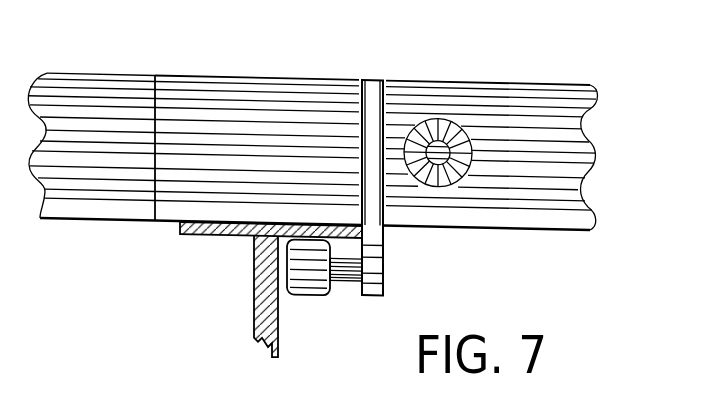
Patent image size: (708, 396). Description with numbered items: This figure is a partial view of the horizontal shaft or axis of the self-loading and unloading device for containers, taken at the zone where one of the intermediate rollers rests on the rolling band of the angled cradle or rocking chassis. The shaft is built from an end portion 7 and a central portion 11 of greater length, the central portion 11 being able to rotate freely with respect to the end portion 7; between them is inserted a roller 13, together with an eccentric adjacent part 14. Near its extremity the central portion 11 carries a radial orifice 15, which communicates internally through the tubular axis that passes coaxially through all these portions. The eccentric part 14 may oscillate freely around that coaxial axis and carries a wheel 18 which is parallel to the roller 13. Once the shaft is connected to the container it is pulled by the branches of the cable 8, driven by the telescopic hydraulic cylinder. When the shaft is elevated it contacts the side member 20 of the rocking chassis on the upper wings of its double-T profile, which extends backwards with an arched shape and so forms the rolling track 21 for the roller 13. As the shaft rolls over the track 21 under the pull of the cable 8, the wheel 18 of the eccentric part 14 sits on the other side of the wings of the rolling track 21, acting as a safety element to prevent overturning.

The end portion 7 is at (84, 197).
The cable 8 is at (460, 122).
The central portion 11 is at (582, 152).
The roller 13 is at (273, 155).
The eccentric adjacent part 14 is at (378, 100).
The radial orifice 15 is at (455, 183).
The wheel 18 is at (315, 293).
The side member 20 is at (262, 340).
The rolling track 21 is at (215, 218).